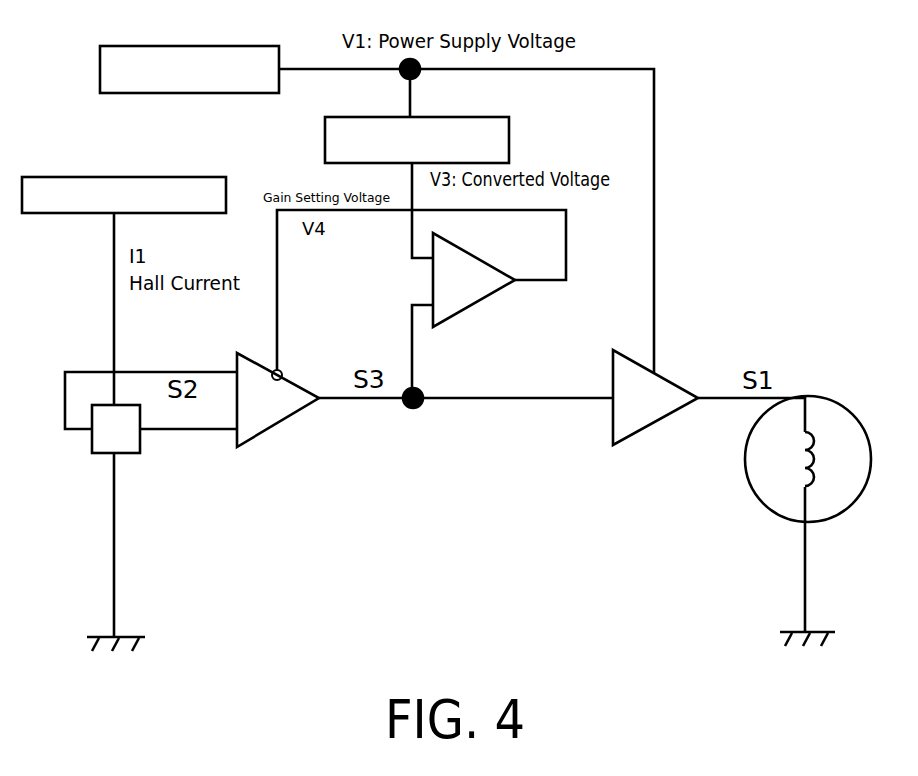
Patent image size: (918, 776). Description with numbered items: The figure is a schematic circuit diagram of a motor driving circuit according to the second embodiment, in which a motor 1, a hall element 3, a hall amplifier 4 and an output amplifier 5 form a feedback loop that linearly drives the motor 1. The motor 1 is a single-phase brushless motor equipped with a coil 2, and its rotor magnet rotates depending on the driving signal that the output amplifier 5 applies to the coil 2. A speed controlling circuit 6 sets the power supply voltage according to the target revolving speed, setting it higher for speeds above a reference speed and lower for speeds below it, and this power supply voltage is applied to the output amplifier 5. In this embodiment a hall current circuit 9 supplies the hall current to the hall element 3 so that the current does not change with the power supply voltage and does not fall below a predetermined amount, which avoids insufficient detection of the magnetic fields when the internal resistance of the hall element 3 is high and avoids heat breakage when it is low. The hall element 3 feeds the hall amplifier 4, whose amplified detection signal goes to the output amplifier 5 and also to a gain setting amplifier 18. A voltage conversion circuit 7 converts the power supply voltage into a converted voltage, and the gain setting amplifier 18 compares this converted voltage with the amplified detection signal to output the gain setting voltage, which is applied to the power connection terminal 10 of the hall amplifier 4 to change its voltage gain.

The motor 1 is at (830, 403).
The coil 2 is at (800, 455).
The hall element 3 is at (117, 437).
The hall amplifier 4 is at (268, 403).
The output amplifier 5 is at (643, 405).
The speed controlling circuit 6 is at (173, 55).
The voltage conversion circuit 7 is at (486, 125).
The hall current circuit 9 is at (124, 179).
The power connection terminal 10 is at (280, 383).
The gain setting amplifier 18 is at (510, 320).